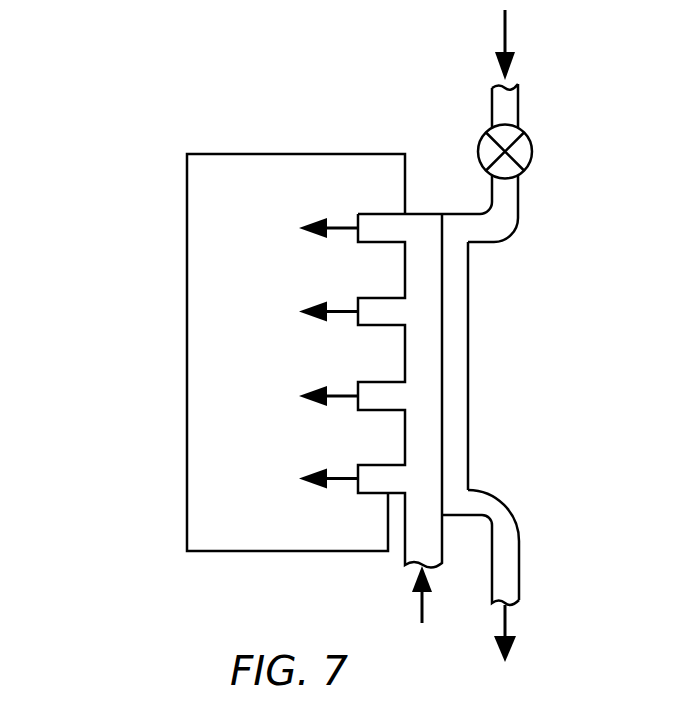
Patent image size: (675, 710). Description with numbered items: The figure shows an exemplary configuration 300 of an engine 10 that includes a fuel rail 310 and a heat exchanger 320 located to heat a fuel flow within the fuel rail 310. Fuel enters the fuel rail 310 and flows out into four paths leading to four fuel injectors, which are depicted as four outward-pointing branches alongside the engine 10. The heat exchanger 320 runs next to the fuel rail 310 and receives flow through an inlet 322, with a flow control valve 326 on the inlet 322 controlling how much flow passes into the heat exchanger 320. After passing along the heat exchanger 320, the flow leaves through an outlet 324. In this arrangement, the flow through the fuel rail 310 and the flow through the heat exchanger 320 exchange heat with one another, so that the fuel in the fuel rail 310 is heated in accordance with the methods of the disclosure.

The configuration 300 is at (152, 113).
The engine 10 is at (276, 150).
The fuel rail 310 is at (422, 210).
The heat exchanger 320 is at (475, 380).
The inlet 322 is at (524, 115).
The outlet 324 is at (528, 537).
The flow control valve 326 is at (535, 165).